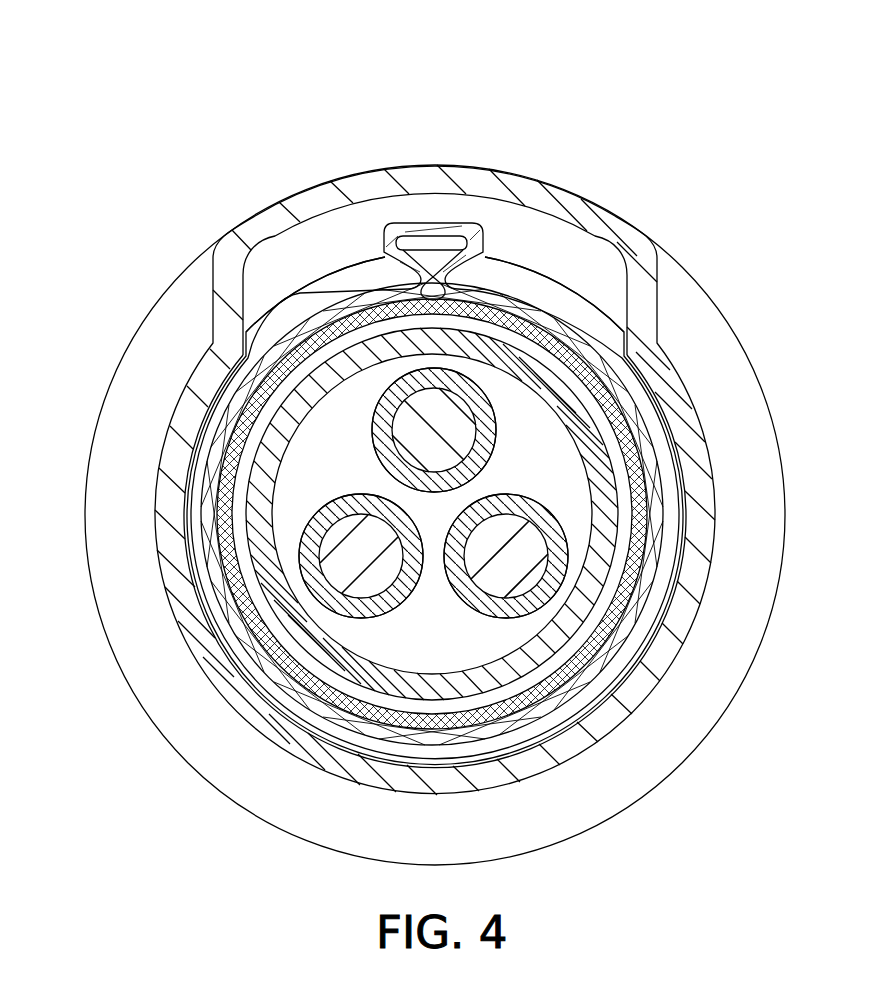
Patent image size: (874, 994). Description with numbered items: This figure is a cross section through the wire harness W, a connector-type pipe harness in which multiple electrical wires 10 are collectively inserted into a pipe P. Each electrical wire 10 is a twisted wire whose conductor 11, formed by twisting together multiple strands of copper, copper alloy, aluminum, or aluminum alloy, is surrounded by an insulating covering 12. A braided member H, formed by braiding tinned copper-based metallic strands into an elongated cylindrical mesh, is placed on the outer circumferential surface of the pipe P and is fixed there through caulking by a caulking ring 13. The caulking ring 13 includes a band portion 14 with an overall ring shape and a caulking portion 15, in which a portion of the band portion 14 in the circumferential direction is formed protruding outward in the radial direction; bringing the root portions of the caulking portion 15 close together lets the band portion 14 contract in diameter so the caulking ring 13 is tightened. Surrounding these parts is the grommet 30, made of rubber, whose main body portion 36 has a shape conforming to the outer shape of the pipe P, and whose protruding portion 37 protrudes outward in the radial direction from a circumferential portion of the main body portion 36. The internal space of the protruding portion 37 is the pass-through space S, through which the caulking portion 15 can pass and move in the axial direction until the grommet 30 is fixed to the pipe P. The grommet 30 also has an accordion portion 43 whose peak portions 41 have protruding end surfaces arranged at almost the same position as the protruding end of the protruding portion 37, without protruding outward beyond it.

The wire harness W is at (164, 102).
The electrical wire 10 is at (523, 560).
The conductor 11 is at (518, 582).
The insulating covering 12 is at (517, 614).
The caulking ring 13 is at (562, 322).
The band portion 14 is at (583, 344).
The caulking portion 15 is at (444, 232).
The grommet 30 is at (168, 318).
The main body portion 36 is at (178, 422).
The protruding portion 37 is at (316, 198).
The peak portion 41 is at (356, 238).
The accordion portion 43 is at (392, 208).
The pass-through space S is at (513, 242).
The braided member H is at (628, 444).
The pipe P is at (622, 481).